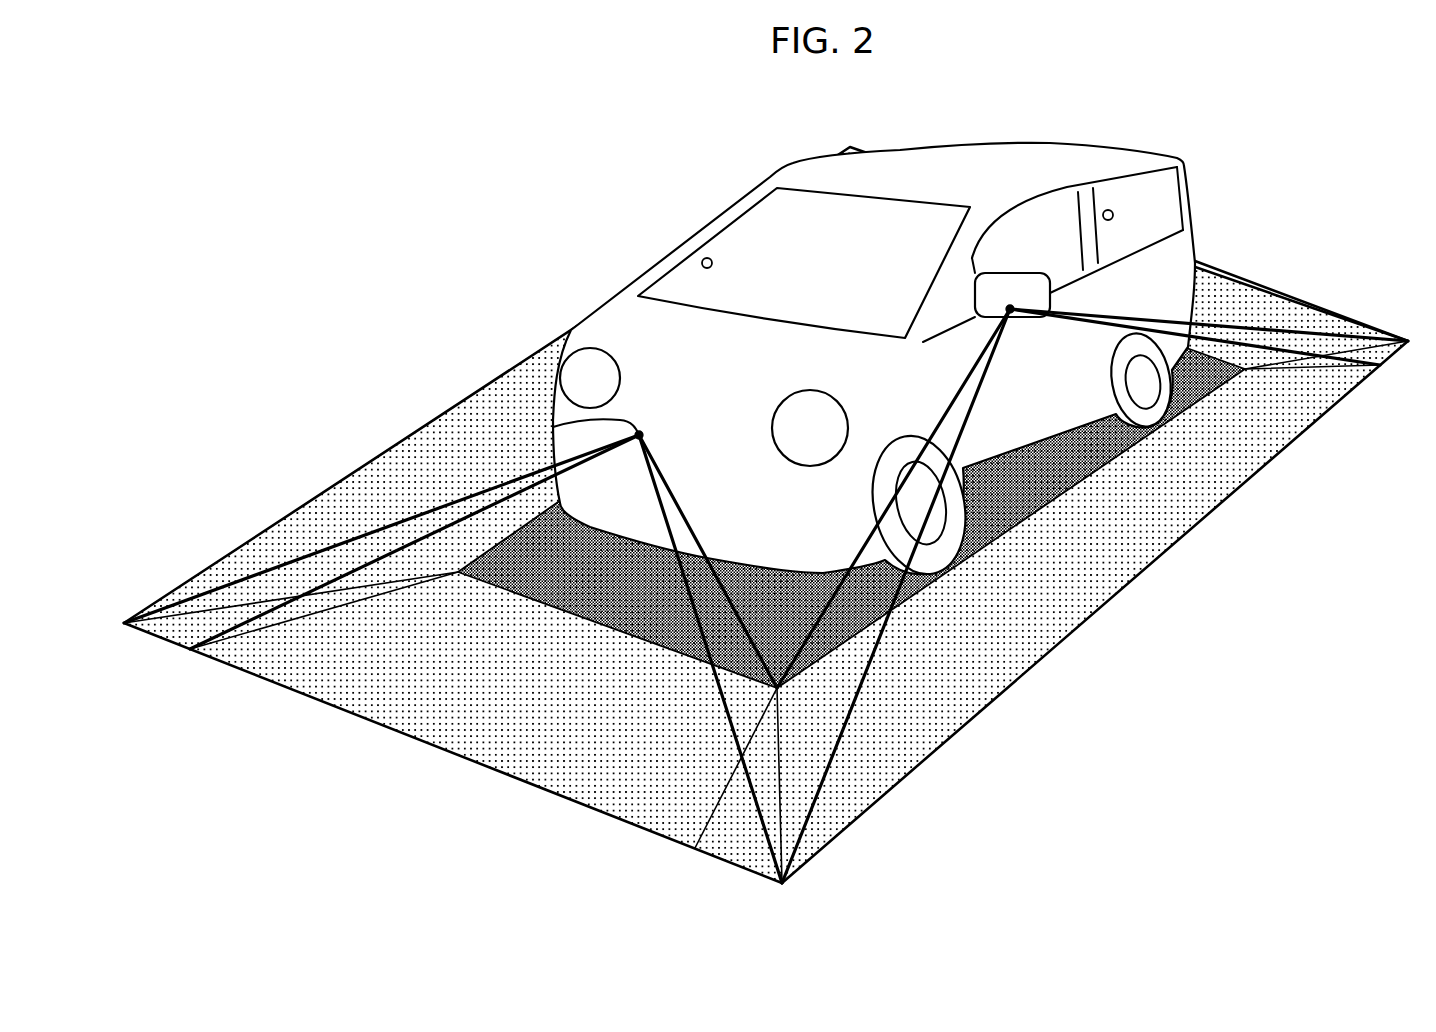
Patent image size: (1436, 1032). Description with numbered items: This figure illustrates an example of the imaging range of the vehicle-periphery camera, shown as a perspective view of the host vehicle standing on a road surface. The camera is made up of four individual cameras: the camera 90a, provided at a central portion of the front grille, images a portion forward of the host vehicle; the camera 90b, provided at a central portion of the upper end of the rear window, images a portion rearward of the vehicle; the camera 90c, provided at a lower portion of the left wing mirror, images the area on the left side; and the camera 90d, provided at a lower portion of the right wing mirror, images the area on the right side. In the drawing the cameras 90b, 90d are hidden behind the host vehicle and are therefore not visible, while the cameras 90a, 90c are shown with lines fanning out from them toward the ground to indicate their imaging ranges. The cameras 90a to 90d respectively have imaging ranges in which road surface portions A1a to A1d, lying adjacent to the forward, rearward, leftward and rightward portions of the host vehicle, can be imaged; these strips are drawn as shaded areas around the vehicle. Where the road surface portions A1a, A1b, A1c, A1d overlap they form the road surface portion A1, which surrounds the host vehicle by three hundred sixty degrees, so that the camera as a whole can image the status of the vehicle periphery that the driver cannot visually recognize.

The road surface portion A1 is at (477, 882).
The road surface portion A1a is at (420, 700).
The road surface portion A1b is at (1262, 285).
The road surface portion A1c is at (870, 767).
The road surface portion A1d is at (330, 500).
The camera 90a is at (632, 423).
The camera 90b is at (1118, 210).
The camera 90c is at (1014, 314).
The camera 90d is at (693, 254).